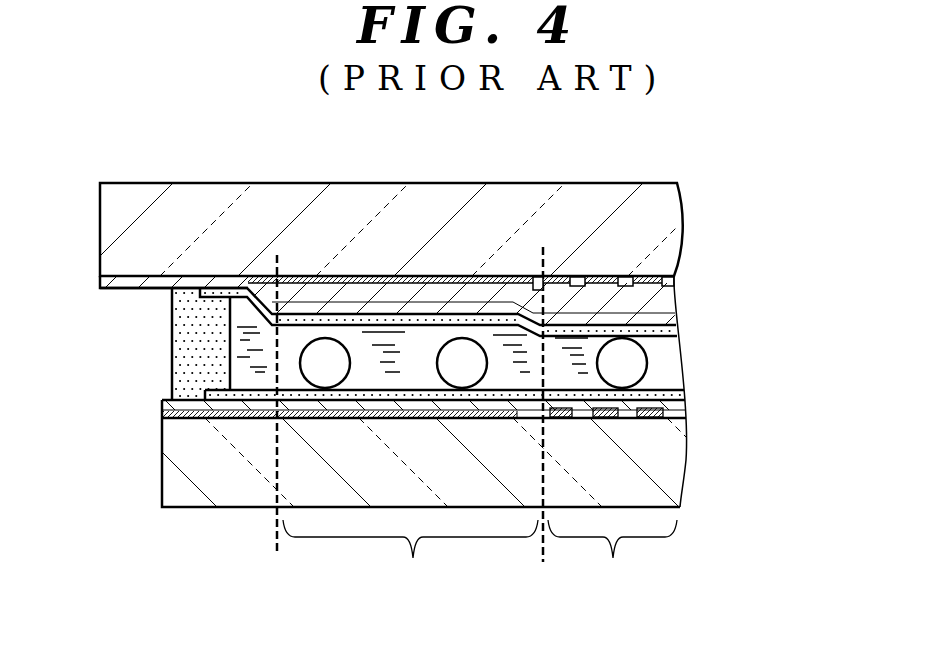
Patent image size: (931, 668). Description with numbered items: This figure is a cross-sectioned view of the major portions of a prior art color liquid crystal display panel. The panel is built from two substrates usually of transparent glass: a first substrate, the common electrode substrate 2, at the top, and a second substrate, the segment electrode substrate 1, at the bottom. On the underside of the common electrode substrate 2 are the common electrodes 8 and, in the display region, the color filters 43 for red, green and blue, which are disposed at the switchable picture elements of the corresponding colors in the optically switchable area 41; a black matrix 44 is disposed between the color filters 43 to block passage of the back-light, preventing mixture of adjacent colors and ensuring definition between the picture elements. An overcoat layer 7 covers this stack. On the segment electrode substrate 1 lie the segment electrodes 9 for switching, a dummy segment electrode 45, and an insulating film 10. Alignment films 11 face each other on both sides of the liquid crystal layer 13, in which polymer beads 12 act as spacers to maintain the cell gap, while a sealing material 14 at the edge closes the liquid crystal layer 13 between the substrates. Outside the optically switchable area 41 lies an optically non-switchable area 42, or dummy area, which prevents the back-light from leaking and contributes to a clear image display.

The second substrate 1 is at (663, 477).
The first substrate 2 is at (673, 240).
The overcoat layer 7 is at (265, 282).
The common electrodes 8 is at (125, 283).
The segment electrodes 9 is at (662, 418).
The insulating film 10 is at (163, 403).
The alignment films 11 is at (672, 332).
The polymer beads 12 is at (638, 362).
The liquid crystal layer 13 is at (370, 370).
The sealing material 14 is at (180, 355).
The optically switchable area 41 is at (612, 556).
The optically non-switchable area 42 is at (410, 556).
The color filters 43 is at (655, 277).
The black matrix 44 is at (577, 278).
The dummy segment electrode 45 is at (163, 413).